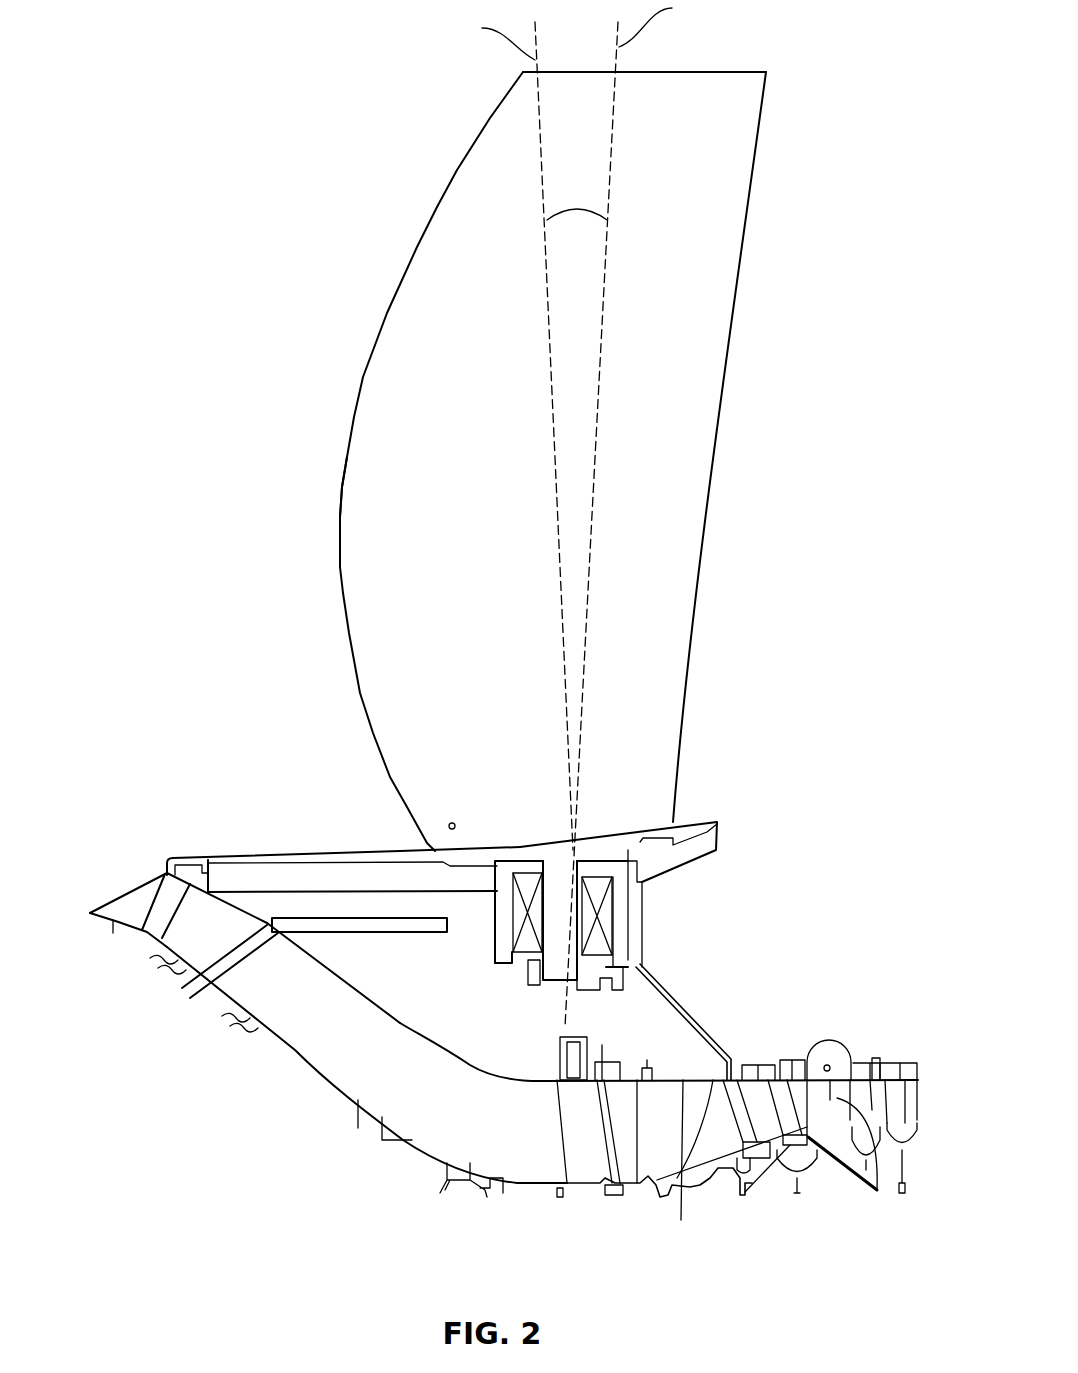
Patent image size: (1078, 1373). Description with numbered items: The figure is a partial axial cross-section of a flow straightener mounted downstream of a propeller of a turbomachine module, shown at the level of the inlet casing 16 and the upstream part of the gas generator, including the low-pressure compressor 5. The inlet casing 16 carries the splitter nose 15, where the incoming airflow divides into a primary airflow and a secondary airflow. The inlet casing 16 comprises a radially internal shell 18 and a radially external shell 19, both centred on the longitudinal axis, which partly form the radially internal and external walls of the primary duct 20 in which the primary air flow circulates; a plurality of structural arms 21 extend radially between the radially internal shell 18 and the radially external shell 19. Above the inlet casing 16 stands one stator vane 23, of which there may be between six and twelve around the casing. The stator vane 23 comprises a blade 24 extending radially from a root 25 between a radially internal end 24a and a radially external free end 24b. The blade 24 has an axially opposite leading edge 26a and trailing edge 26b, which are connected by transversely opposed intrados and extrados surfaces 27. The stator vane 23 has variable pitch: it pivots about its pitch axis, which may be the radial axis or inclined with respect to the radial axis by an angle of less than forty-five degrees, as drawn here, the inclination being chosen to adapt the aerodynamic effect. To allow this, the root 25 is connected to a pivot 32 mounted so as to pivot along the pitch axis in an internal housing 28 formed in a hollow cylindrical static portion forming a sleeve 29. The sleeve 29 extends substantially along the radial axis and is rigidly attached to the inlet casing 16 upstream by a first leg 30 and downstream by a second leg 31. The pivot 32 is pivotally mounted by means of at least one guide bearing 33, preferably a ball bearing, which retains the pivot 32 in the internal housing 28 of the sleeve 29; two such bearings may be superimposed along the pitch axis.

The low-pressure compressor 5 is at (877, 1192).
The splitter nose 15 is at (197, 875).
The inlet casing 16 is at (203, 930).
The radially internal shell 18 is at (268, 1010).
The radially external shell 19 is at (341, 977).
The primary duct 20 is at (540, 1160).
The structural arm 21 is at (352, 1062).
The stator vane 23 is at (300, 287).
The blade 24 is at (487, 190).
The radially internal end 24a is at (450, 822).
The radially external free end 24b is at (736, 70).
The root 25 is at (694, 797).
The leading edge 26a is at (405, 257).
The trailing edge 26b is at (754, 177).
The intrados and extrados surfaces 27 is at (398, 437).
The internal housing 28 is at (525, 968).
The sleeve 29 is at (430, 916).
The first leg 30 is at (288, 882).
The second leg 31 is at (683, 1166).
The pivot 32 is at (560, 885).
The guide bearing 33 is at (527, 913).